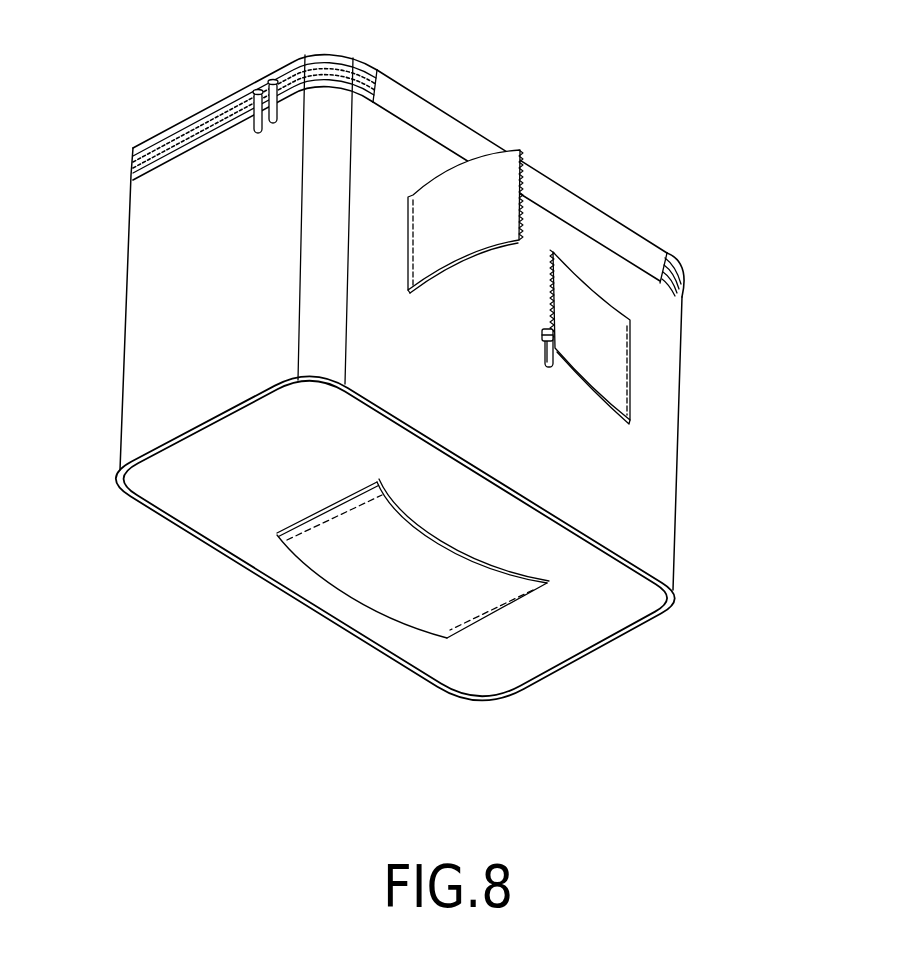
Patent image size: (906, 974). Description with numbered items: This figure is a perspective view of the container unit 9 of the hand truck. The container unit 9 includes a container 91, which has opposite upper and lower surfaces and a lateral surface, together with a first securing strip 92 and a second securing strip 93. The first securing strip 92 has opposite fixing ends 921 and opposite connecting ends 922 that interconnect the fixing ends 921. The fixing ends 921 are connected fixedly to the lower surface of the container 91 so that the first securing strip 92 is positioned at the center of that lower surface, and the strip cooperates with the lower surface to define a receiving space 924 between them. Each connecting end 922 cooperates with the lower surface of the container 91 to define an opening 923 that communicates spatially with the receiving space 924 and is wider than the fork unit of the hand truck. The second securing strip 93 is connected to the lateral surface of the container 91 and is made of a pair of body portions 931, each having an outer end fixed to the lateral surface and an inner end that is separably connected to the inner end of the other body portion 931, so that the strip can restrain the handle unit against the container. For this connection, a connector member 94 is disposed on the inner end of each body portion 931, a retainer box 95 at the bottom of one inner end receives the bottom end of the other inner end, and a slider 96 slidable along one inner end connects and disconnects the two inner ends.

The container unit 9 is at (645, 198).
The container 91 is at (643, 495).
The first securing strip 92 is at (432, 592).
The fixing ends 921 is at (310, 507).
The connecting ends 922 is at (417, 527).
The opening 923 is at (333, 587).
The receiving space 924 is at (465, 542).
The second securing strip 93 is at (610, 366).
The body portions 931 is at (483, 180).
The connector members 94 is at (523, 174).
The retainer box 95 is at (547, 347).
The slider 96 is at (545, 333).